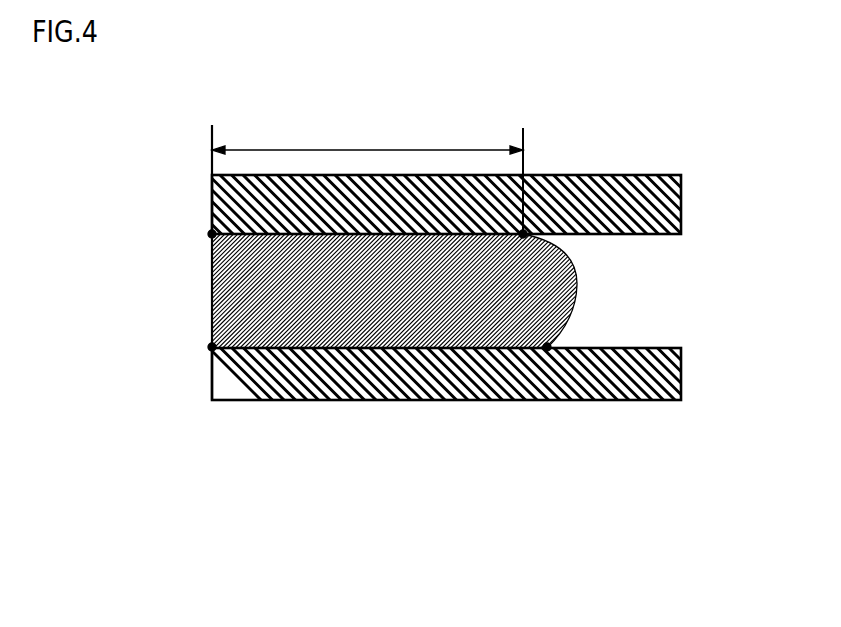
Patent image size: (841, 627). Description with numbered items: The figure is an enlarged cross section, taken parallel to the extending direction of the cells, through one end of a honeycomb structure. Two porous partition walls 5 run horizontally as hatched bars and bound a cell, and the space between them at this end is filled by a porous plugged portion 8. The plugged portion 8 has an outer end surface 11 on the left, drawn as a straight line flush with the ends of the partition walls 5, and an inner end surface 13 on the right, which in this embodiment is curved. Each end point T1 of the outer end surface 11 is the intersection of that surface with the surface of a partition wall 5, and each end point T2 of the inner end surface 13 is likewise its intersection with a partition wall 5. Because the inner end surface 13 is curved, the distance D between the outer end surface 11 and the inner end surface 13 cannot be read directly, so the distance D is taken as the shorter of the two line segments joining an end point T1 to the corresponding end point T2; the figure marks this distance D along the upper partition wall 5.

The partition wall 5 is at (591, 175).
The plugged portion 8 is at (201, 304).
The outer end surface 11 is at (212, 292).
The inner end surface 13 is at (577, 287).
The end point of the outer end surface T1 is at (212, 234).
The end point of the inner end surface T2 is at (523, 234).
The distance between the outer end surface and the inner end surface D is at (367, 176).